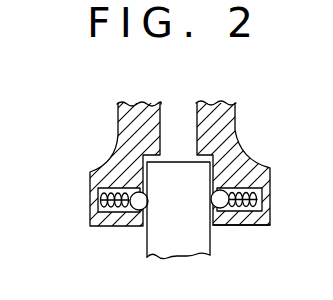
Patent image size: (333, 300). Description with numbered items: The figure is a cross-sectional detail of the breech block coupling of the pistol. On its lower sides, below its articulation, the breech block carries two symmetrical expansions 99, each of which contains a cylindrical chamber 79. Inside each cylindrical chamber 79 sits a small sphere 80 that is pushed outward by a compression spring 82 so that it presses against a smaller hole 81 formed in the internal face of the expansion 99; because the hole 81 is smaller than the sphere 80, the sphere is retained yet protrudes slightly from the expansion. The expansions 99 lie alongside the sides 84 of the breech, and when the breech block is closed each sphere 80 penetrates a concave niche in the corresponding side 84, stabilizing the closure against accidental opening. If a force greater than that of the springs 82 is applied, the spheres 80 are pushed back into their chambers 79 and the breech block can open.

The cylindrical chamber 79 is at (260, 196).
The small sphere 80 is at (203, 205).
The smaller hole 81 is at (213, 191).
The compression spring 82 is at (248, 222).
The side of the breech 84 is at (147, 242).
The symmetrical expansion 99 is at (232, 224).